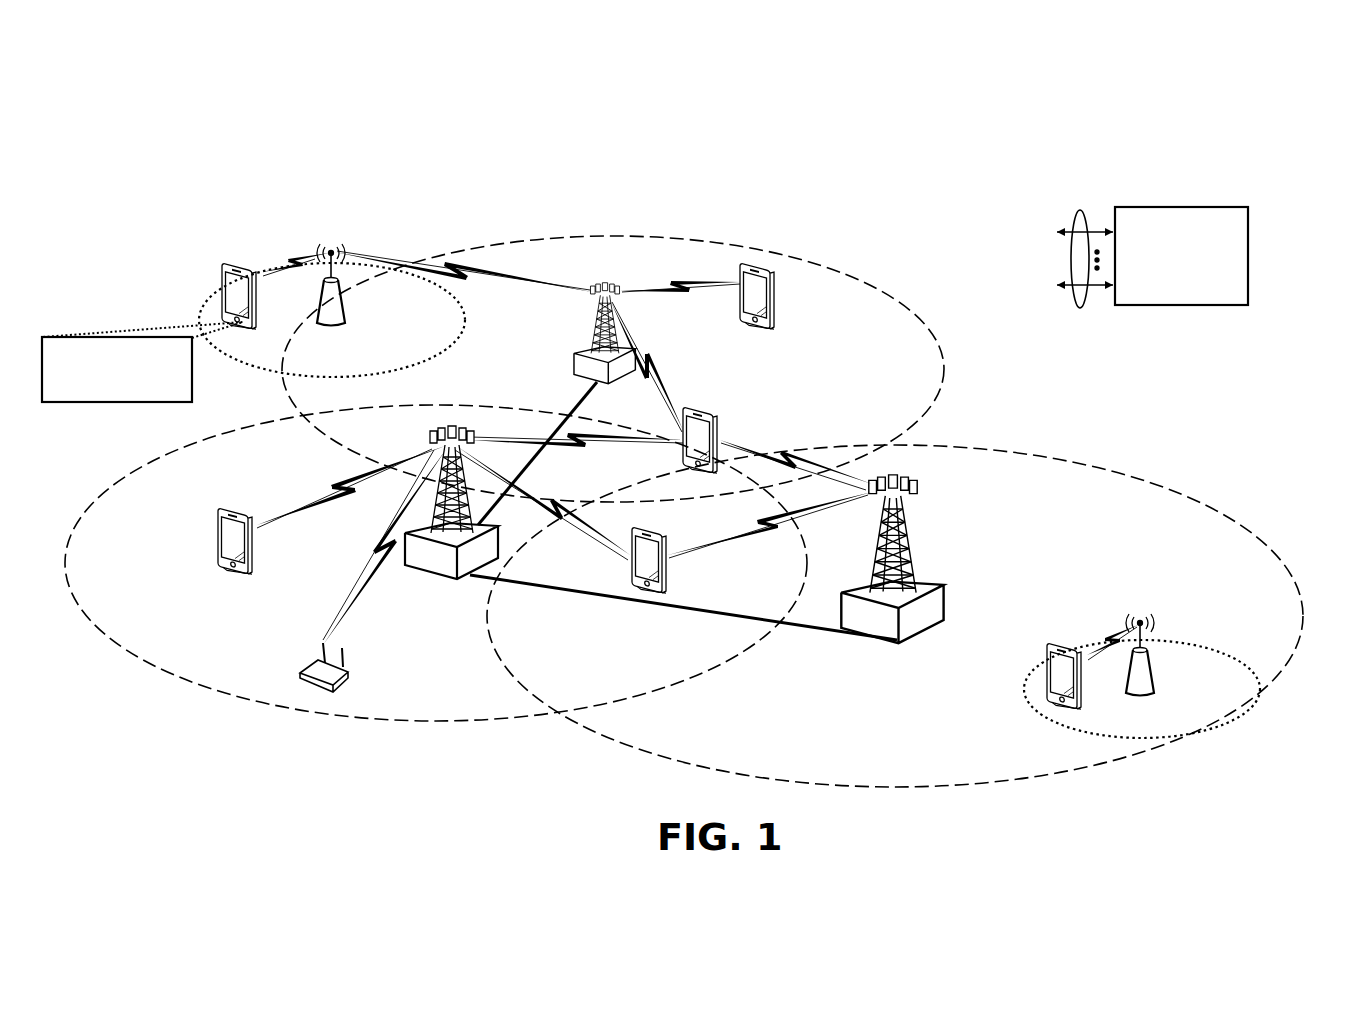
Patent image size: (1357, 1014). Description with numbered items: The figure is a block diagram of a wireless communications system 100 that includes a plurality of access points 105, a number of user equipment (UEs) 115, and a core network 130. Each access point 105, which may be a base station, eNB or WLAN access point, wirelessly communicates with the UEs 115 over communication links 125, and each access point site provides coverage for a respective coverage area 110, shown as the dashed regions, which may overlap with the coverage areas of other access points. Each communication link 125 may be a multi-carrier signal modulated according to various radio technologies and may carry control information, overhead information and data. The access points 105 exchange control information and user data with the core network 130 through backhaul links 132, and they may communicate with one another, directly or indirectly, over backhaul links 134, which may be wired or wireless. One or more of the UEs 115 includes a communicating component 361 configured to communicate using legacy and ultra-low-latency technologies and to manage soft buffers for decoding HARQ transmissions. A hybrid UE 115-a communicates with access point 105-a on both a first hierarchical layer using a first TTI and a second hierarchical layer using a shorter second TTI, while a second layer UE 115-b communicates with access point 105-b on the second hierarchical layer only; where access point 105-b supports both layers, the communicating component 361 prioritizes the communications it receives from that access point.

The wireless communications system 100 is at (1282, 112).
The access points 105 is at (348, 320).
The access point 105-a is at (430, 576).
The access point 105-b is at (576, 360).
The coverage area 110 is at (710, 235).
The user equipment 115 is at (223, 284).
The hybrid UE 115-a is at (222, 528).
The second layer UE 115-b is at (777, 309).
The communication links 125 is at (285, 263).
The core network 130 is at (1168, 207).
The backhaul links 132 is at (1079, 214).
The backhaul links 134 is at (568, 410).
The communicating component 361 is at (92, 403).